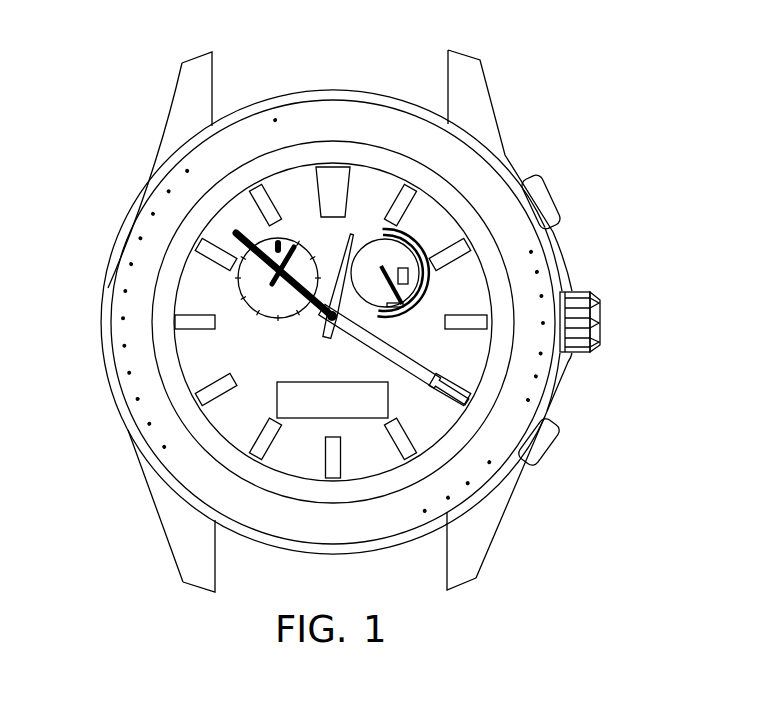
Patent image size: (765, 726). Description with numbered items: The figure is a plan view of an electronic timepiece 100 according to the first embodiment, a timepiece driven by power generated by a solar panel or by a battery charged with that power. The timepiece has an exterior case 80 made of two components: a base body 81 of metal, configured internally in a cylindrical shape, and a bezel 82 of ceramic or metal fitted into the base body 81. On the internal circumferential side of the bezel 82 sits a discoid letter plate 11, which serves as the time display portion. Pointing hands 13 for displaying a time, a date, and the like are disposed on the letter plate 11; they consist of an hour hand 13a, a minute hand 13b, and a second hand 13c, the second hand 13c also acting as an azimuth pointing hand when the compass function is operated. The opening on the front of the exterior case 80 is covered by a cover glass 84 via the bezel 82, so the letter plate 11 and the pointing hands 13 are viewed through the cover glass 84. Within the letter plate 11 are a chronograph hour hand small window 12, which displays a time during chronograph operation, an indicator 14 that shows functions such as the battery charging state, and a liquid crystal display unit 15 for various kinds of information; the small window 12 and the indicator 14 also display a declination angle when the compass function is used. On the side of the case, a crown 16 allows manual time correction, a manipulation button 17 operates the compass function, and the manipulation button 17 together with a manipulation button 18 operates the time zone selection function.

The electronic timepiece 100 is at (582, 145).
The exterior case 80 is at (57, 480).
The base body 81 is at (130, 437).
The bezel 82 is at (190, 482).
The cover glass 84 is at (510, 266).
The letter plate 11 is at (197, 352).
The chronograph hour hand small window 12 is at (238, 278).
The pointing hands 13 is at (422, 72).
The hour hand 13a is at (352, 236).
The minute hand 13b is at (372, 343).
The second hand 13c is at (247, 248).
The indicator 14 is at (416, 246).
The liquid crystal display unit 15 is at (389, 397).
The crown 16 is at (590, 310).
The manipulation button 17 is at (538, 445).
The manipulation button 18 is at (555, 193).